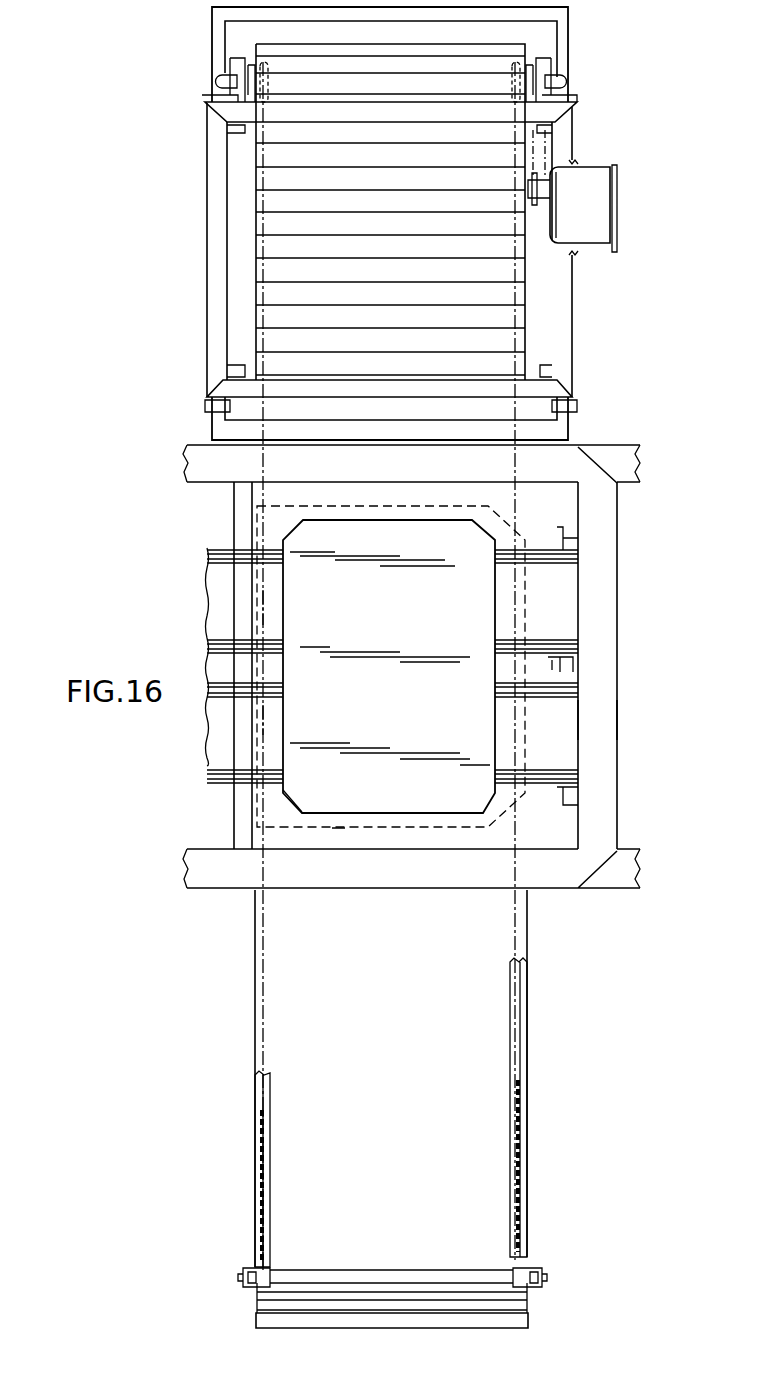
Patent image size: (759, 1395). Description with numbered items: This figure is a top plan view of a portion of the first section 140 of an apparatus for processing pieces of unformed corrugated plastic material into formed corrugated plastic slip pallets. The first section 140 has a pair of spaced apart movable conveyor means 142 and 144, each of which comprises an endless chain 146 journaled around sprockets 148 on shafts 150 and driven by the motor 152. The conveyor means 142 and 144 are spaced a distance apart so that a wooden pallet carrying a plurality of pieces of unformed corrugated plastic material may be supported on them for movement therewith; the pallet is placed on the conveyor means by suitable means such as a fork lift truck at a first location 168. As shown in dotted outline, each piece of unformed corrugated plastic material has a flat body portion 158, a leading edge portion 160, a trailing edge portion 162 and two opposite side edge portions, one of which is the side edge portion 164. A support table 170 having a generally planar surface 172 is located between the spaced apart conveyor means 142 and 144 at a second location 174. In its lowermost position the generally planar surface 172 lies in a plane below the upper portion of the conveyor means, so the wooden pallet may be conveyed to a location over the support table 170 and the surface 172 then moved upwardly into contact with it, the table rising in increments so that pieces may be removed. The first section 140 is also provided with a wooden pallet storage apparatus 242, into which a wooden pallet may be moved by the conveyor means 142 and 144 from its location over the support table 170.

The first section 140 is at (208, 1022).
The movable conveyor means 142 is at (283, 1227).
The movable conveyor means 144 is at (505, 1200).
The endless chain 146 is at (260, 1218).
The sprockets 148 is at (262, 63).
The shafts 150 is at (562, 82).
The motor 152 is at (585, 243).
The flat body portion 158 is at (413, 773).
The leading edge portion 160 is at (527, 720).
The trailing edge portion 162 is at (272, 720).
The side edge portion 164 is at (372, 506).
The first location 168 is at (480, 1058).
The support table 170 is at (298, 788).
The generally planar surface 172 is at (382, 790).
The second location 174 is at (272, 608).
The wooden pallet storage apparatus 242 is at (252, 244).